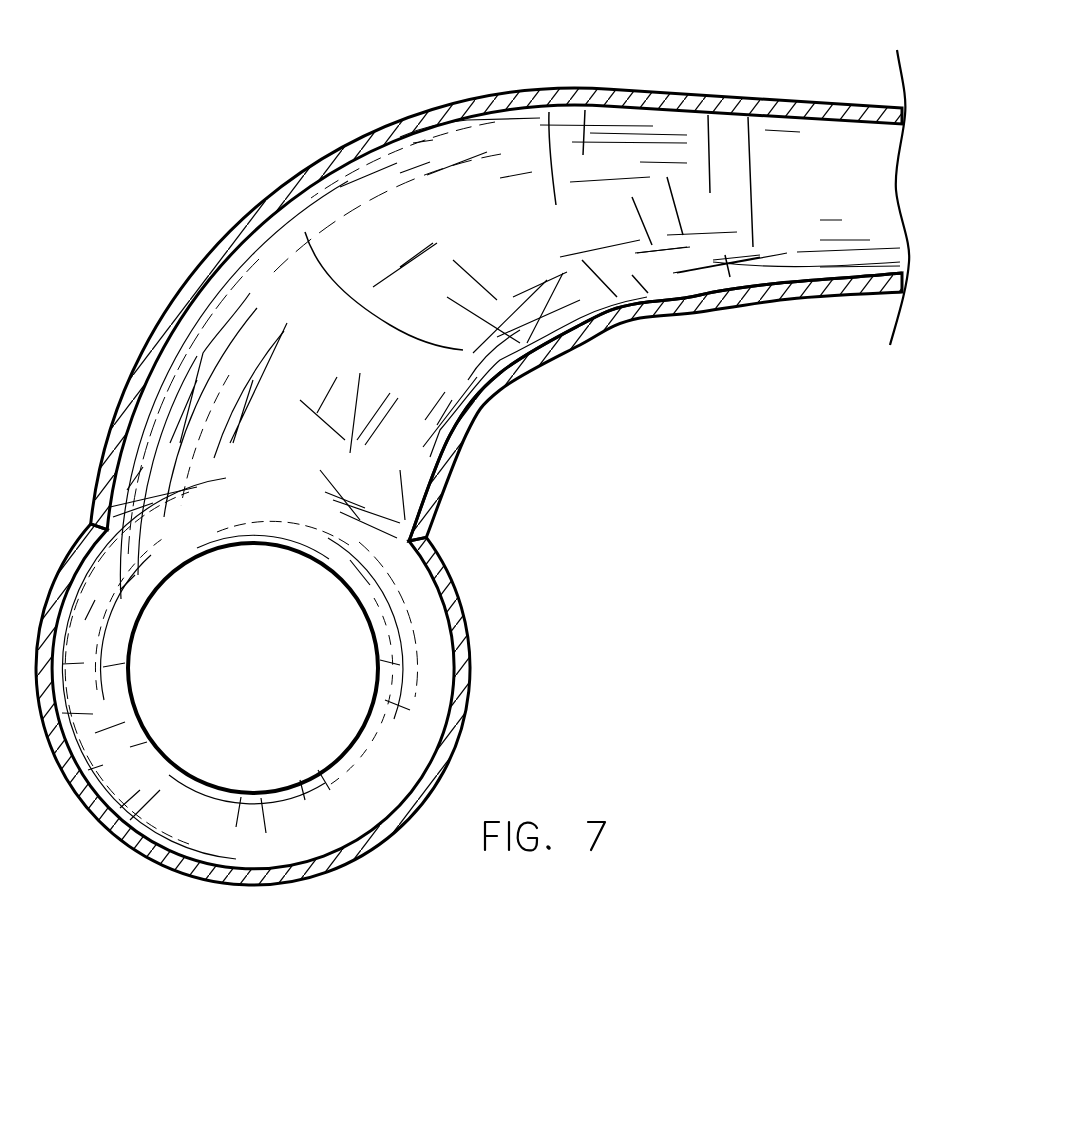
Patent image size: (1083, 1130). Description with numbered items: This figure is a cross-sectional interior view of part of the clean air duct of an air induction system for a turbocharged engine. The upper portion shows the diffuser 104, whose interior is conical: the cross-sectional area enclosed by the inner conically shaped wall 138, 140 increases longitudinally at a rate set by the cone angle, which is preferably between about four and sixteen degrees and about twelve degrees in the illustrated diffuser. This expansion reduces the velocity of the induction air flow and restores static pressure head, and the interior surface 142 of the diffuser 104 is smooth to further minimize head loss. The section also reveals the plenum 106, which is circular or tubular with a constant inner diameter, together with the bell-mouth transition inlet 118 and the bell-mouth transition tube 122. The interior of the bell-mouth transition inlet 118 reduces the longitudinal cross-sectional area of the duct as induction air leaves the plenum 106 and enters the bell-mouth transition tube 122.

The inner conically shaped wall 138 is at (717, 92).
The inner conically shaped wall 140 is at (741, 306).
The diffuser 104 is at (597, 322).
The interior surface 142 is at (387, 433).
The bell-mouth transition tube 122 is at (132, 693).
The plenum 106 is at (452, 742).
The bell-mouth transition inlet 118 is at (247, 832).